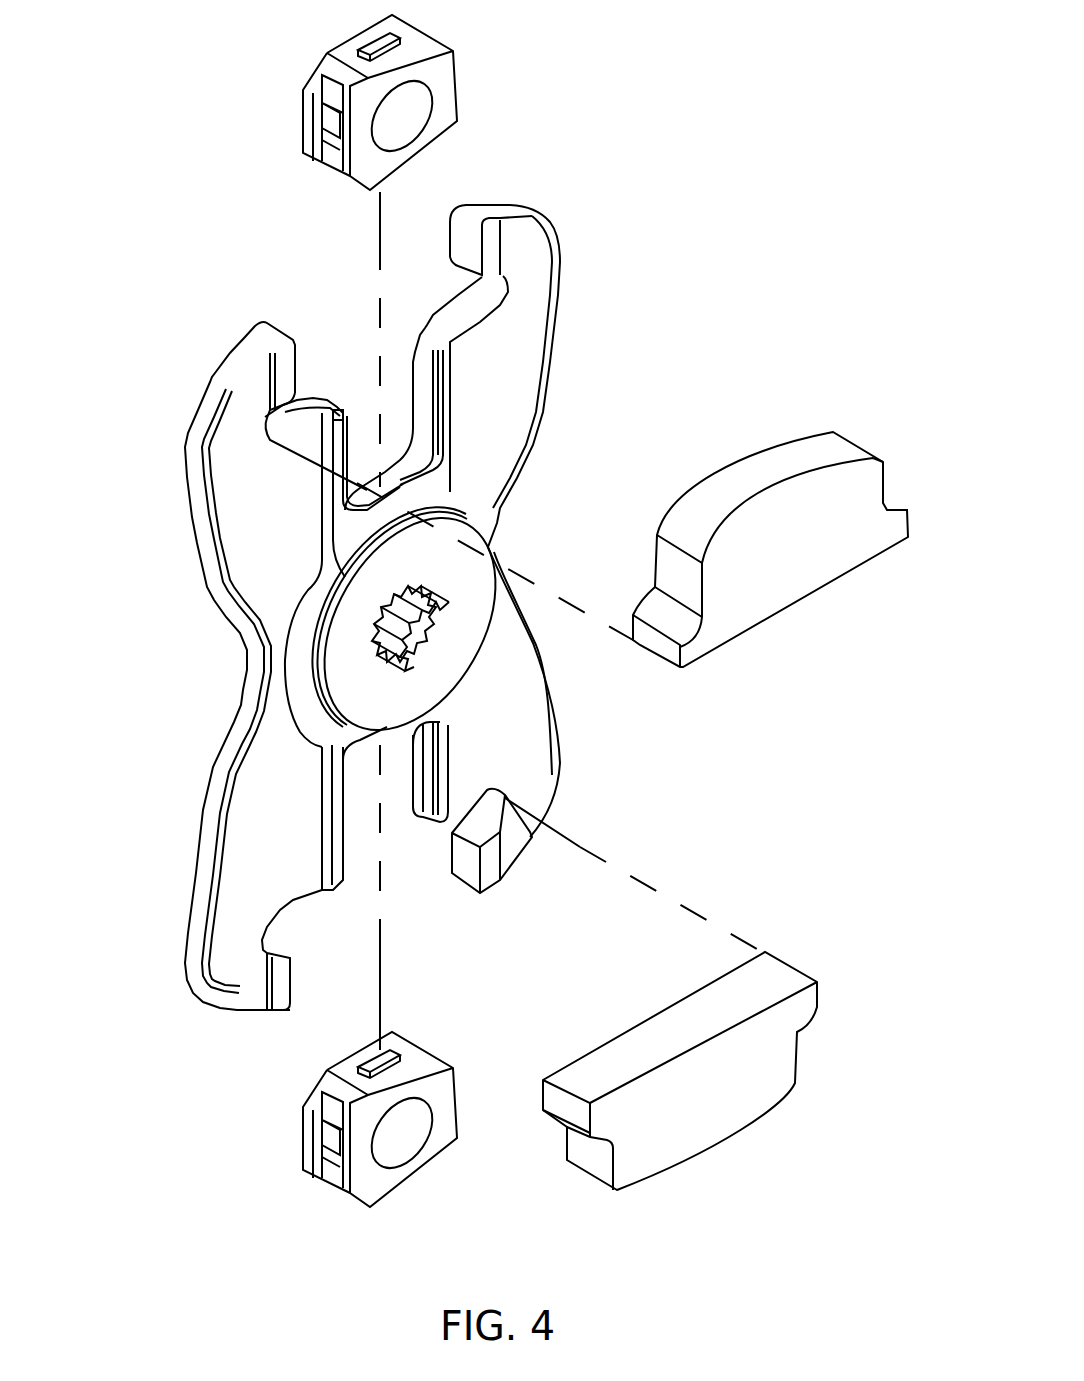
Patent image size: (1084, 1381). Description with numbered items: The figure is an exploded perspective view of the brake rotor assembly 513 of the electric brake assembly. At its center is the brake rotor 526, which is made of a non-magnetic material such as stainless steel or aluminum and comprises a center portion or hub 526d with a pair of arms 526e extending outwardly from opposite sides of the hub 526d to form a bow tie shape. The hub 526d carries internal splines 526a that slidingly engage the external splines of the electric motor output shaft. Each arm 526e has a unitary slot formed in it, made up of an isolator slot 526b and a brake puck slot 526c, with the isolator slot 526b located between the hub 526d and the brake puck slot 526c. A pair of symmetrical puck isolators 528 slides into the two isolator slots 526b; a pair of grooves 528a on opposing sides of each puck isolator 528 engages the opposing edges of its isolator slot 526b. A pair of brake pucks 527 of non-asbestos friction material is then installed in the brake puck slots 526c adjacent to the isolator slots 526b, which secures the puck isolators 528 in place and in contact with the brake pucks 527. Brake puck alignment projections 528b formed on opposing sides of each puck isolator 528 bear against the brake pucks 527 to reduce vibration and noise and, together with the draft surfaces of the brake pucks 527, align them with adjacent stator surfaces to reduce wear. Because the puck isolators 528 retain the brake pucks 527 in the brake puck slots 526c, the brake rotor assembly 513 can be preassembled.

The brake rotor assembly 513 is at (150, 126).
The brake rotor 526 is at (190, 414).
The internal splines 526a is at (430, 656).
The isolator slot 526b is at (363, 412).
The brake puck slot 526c is at (443, 283).
The hub 526d is at (347, 673).
The arms 526e is at (305, 529).
The brake pucks 527 is at (819, 561).
The puck isolators 528 is at (437, 130).
The grooves 528a is at (330, 155).
The brake puck alignment projections 528b is at (387, 36).